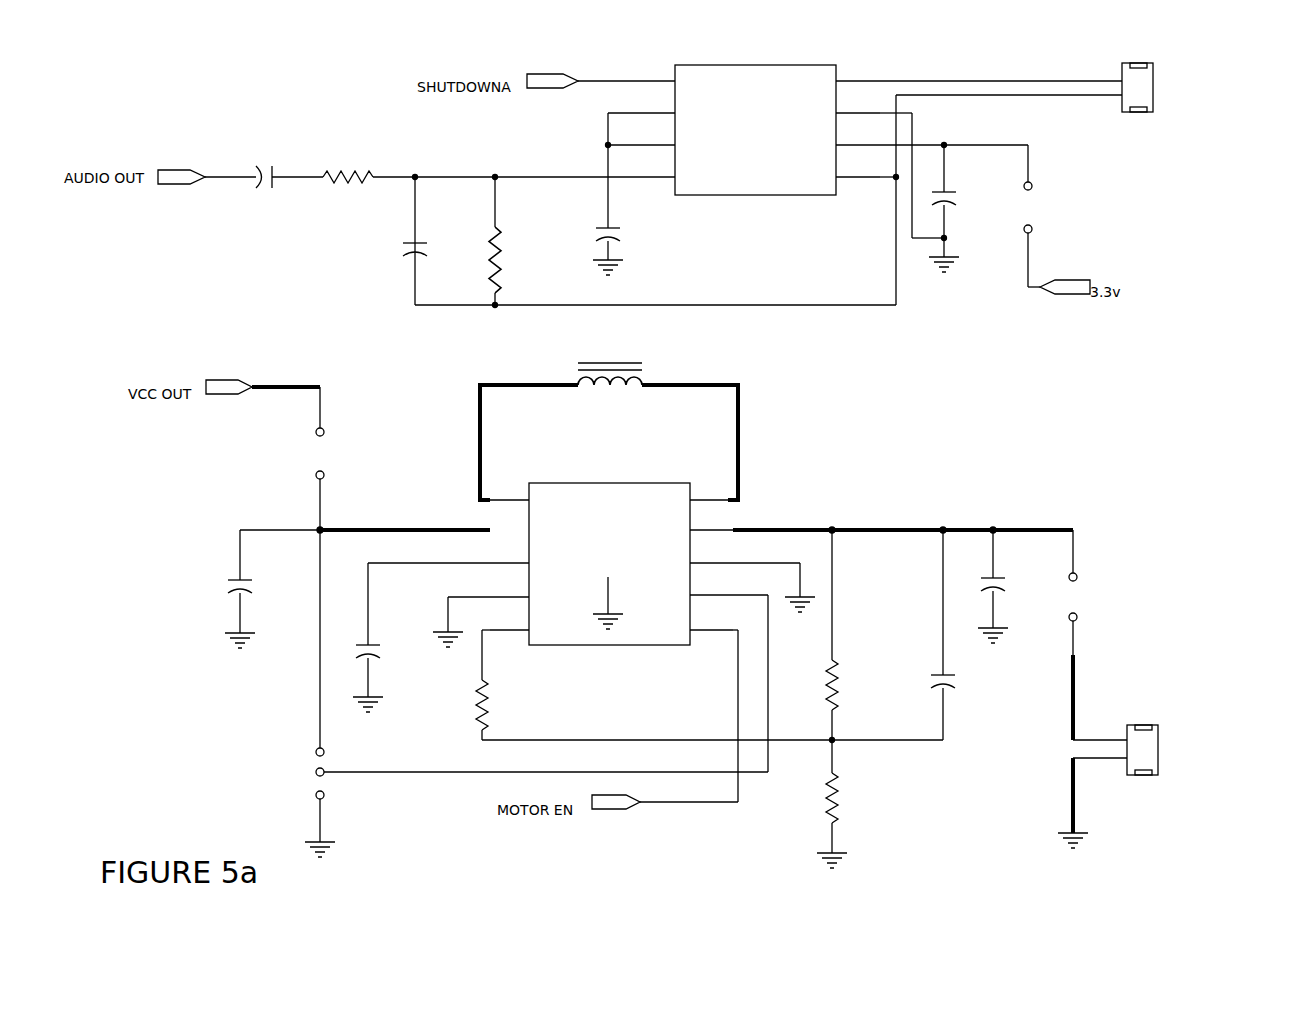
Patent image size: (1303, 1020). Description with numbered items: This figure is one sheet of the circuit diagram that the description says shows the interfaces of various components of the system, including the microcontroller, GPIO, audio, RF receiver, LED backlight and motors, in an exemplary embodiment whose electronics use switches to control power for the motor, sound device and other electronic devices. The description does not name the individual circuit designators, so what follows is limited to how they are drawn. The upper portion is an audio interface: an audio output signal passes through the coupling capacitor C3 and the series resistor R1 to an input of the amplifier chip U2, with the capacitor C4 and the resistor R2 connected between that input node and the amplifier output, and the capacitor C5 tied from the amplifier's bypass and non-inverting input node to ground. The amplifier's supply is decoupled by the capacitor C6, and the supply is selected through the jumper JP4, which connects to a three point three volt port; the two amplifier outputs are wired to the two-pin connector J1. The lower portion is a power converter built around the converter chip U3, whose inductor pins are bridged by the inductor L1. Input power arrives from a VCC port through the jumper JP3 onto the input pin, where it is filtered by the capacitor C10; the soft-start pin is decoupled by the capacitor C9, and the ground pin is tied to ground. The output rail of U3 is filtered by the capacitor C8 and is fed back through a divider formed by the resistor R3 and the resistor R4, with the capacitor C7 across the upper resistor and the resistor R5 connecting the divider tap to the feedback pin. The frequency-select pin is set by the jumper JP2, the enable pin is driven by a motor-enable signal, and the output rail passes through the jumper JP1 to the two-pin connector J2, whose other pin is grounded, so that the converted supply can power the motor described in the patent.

The 0.47uF coupling capacitor C3 is at (265, 184).
The 10k ohm input resistor R1 is at (351, 179).
The 5pF capacitor C4 is at (438, 255).
The 50k ohm feedback resistor R2 is at (535, 241).
The 2.2uF bypass capacitor C5 is at (636, 242).
The TPA301DGN audio amplifier U2 is at (768, 114).
The 1uF supply capacitor C6 is at (966, 208).
The power jumper JP4 is at (1032, 216).
The TYCO 640454-2 speaker connector J1 is at (1193, 87).
The VLCF5020T inductor L1 is at (609, 417).
The TPS61081DRC boost converter U3 is at (611, 550).
The VCC jumper JP3 is at (332, 458).
The 4.7uF input capacitor C10 is at (268, 589).
The 0.047uF soft-start capacitor C9 is at (421, 637).
The 100 ohm feedback resistor R5 is at (709, 685).
The 437k ohm feedback resistor R3 is at (876, 635).
The 49.9k ohm feedback resistor R4 is at (881, 804).
The 33pF feedforward capacitor C7 is at (971, 635).
The 4.7uF output capacitor C8 is at (1022, 586).
The output jumper JP1 is at (1090, 592).
The TYCO 640454-2 motor connector J2 is at (1197, 749).
The frequency select jumper JP2 is at (536, 799).